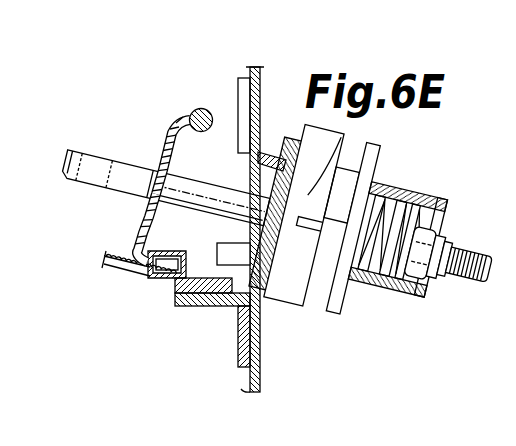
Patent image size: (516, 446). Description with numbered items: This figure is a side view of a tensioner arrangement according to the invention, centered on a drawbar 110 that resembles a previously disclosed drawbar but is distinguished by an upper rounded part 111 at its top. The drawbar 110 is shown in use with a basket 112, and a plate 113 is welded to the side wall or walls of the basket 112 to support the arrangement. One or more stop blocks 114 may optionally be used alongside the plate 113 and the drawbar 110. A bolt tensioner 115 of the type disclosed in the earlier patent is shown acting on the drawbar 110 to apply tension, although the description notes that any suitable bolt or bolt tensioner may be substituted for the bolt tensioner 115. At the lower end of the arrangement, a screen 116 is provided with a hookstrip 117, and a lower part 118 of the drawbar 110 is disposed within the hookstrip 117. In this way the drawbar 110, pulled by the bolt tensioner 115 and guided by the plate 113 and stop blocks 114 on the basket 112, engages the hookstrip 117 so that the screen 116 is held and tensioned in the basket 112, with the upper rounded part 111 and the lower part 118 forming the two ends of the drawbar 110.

The drawbar 110 is at (166, 133).
The upper rounded part 111 is at (206, 108).
The basket 112 is at (263, 78).
The plate 113 is at (253, 127).
The stop block 114 is at (233, 257).
The bolt tensioner 115 is at (173, 170).
The screen 116 is at (120, 270).
The hookstrip 117 is at (150, 246).
The lower part 118 is at (158, 280).